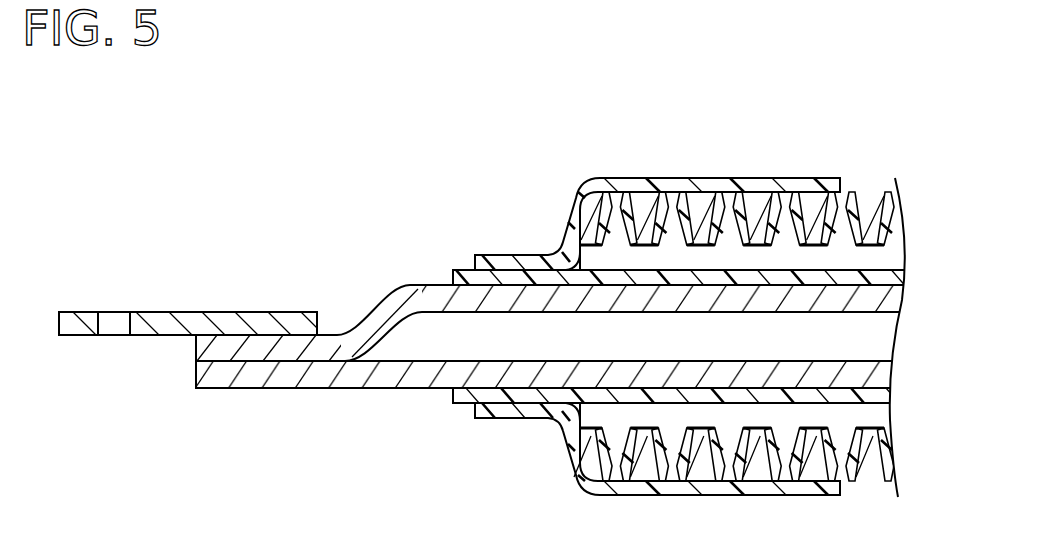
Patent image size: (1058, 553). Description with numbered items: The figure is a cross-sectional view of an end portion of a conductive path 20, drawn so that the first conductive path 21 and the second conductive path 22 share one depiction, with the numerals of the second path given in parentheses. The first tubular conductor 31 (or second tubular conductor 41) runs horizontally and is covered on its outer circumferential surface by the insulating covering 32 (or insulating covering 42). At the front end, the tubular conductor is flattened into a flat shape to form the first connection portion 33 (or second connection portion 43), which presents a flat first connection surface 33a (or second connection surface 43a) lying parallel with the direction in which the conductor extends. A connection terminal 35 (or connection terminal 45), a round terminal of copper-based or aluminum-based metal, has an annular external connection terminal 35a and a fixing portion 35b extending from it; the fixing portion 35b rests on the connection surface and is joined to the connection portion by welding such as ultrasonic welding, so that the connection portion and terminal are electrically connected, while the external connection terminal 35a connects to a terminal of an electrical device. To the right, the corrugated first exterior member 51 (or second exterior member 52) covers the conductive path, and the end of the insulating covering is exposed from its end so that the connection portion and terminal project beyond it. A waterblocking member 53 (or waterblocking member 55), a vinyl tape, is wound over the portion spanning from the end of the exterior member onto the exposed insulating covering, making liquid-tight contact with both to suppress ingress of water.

The tube assembly 20 is at (212, 182).
The first conductive path 21 is at (437, 282).
The second conductive path 22 is at (624, 292).
The first tubular conductor 31 is at (432, 380).
The second tubular conductor 41 is at (628, 415).
The insulating covering 32 is at (535, 395).
The insulating covering 42 is at (682, 384).
The first connection portion 33 is at (245, 382).
The second connection portion 43 is at (307, 322).
The first connection surface 33a is at (258, 332).
The second connection surface 43a is at (307, 295).
The connection terminal 35 is at (85, 310).
The connection terminal 45 is at (198, 321).
The external connection terminal 35a is at (75, 333).
The fixing portion 35b is at (283, 317).
The first exterior member 51 is at (855, 208).
The second exterior member 52 is at (762, 310).
The waterblocking member 53 is at (672, 182).
The waterblocking member 55 is at (657, 311).